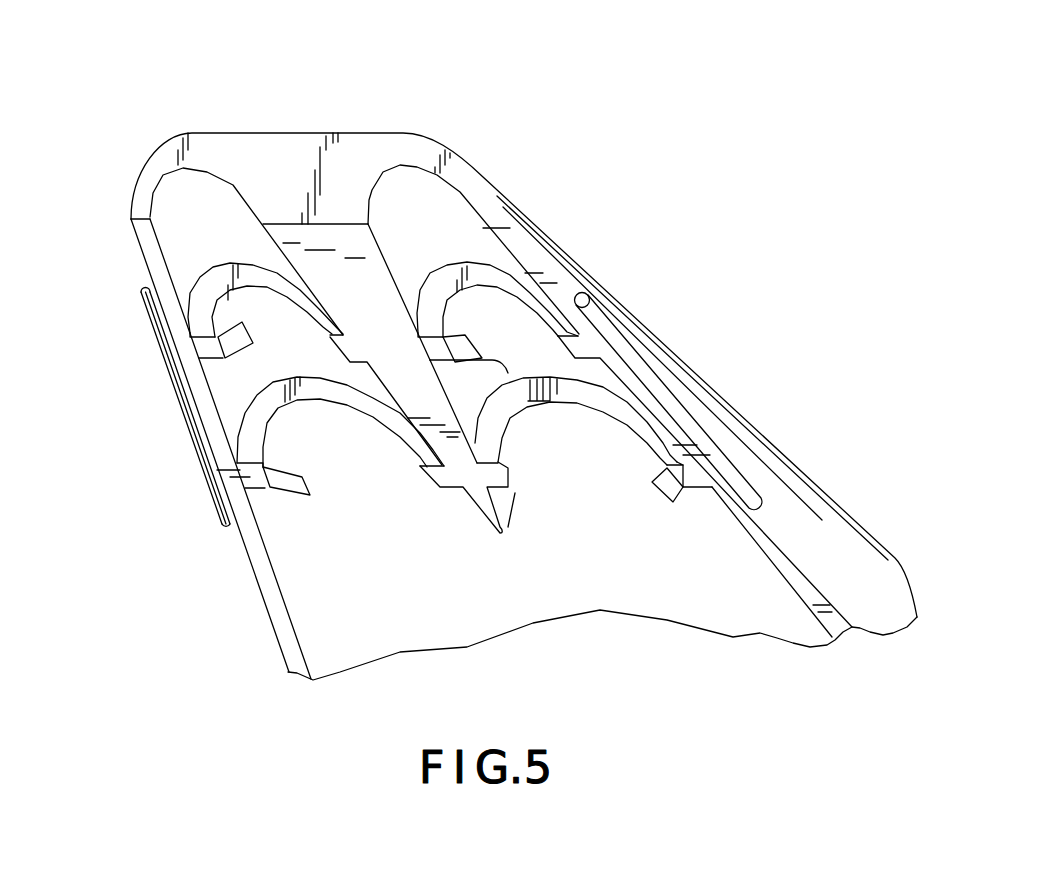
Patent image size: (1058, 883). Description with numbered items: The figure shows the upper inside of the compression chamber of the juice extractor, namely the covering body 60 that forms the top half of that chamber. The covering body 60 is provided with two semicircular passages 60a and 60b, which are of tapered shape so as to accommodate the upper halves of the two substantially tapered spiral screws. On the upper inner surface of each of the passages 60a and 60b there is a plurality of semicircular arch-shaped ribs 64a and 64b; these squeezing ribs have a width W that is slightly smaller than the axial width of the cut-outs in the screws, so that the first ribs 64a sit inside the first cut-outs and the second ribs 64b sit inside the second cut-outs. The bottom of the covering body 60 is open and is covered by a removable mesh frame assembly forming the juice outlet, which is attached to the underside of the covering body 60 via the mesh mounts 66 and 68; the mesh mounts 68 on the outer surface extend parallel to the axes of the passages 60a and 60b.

The covering body 60 is at (398, 84).
The semicircular passage 60a is at (450, 220).
The semicircular passage 60b is at (182, 220).
The semicircular arch-shaped rib 64a is at (200, 292).
The semicircular arch-shaped rib 64b is at (250, 442).
The mesh mount 66 is at (153, 326).
The mesh mount 68 is at (613, 323).
The width of squeezing rib W is at (248, 332).